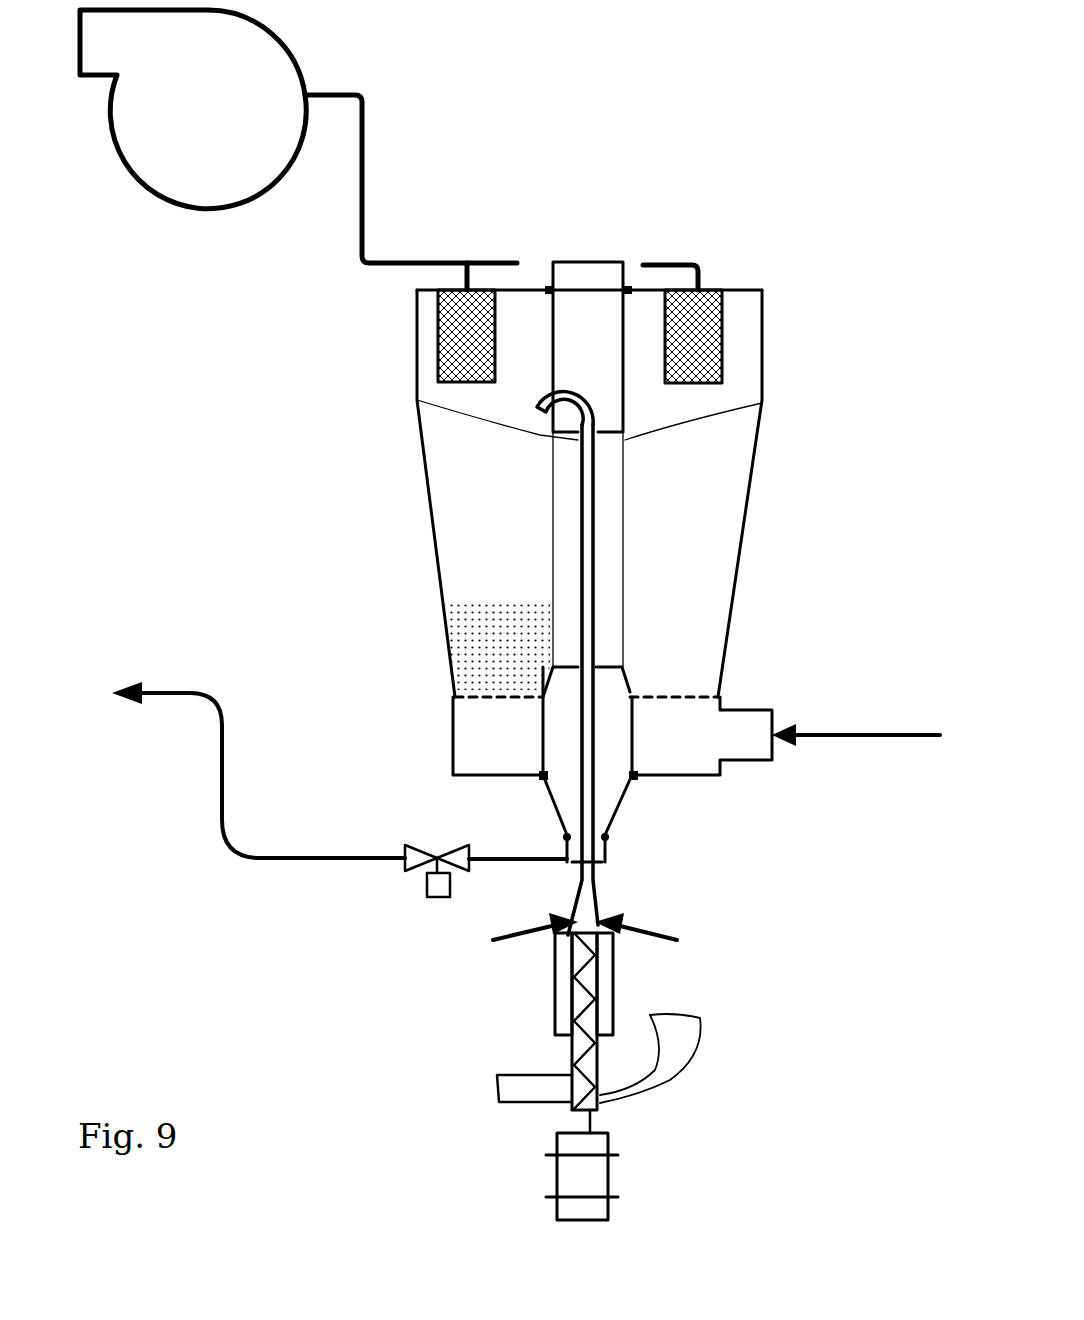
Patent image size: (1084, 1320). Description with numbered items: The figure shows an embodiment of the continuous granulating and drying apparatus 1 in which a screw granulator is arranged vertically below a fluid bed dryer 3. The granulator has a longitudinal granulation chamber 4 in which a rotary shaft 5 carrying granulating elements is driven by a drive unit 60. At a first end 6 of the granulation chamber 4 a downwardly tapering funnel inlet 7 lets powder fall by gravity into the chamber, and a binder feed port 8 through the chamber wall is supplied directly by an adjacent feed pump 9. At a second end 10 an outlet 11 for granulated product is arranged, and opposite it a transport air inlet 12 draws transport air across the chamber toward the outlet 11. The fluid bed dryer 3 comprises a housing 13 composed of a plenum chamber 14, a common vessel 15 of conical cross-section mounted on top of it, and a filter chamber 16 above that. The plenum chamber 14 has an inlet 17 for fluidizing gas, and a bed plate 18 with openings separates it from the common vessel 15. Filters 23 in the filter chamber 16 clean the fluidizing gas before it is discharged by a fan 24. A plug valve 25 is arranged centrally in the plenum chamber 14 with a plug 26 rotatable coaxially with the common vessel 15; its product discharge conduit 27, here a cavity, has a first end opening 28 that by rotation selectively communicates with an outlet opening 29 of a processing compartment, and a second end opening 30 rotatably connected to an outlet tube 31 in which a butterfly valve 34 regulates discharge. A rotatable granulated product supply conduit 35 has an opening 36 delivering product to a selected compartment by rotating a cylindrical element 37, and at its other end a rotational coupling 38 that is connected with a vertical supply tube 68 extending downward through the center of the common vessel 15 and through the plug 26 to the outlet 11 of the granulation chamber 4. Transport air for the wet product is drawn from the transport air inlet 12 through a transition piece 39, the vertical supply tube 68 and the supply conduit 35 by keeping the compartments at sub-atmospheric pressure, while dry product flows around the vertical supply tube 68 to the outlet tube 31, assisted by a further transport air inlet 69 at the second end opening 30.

The continuous granulating and drying apparatus 1 is at (190, 623).
The fluid bed dryer 3 is at (330, 488).
The granulation chamber 4 is at (567, 1048).
The rotary shaft 5 is at (607, 1000).
The first end 6 is at (600, 1093).
The inlet 7 is at (660, 1020).
The binder feed port 8 is at (570, 1082).
The feed pump 9 is at (553, 1073).
The second end 10 is at (563, 932).
The outlet 11 is at (597, 920).
The transport air inlet 12 is at (579, 944).
The housing 13 is at (745, 527).
The plenum chamber 14 is at (453, 742).
The common vessel 15 is at (436, 548).
The filter chamber 16 is at (417, 350).
The inlet 17 is at (775, 705).
The bed plate 18 is at (690, 697).
The filters 23 is at (723, 342).
The fan 24 is at (245, 131).
The plug valve 25 is at (650, 786).
The plug 26 is at (473, 777).
The product discharge conduit 27 is at (565, 770).
The first end opening 28 is at (630, 693).
The outlet opening 29 is at (640, 687).
The second end opening 30 is at (562, 838).
The outlet tube 31 is at (263, 860).
The butterfly valve 34 is at (462, 880).
The granulated product supply conduit 35 is at (567, 392).
The opening 36 is at (535, 408).
The cylindrical element 37 is at (573, 280).
The rotational coupling 38 is at (595, 437).
The transition piece 39 is at (573, 903).
The drive unit 60 is at (593, 1212).
The vertical supply tube 68 is at (580, 527).
The transport air inlet 69 is at (603, 862).